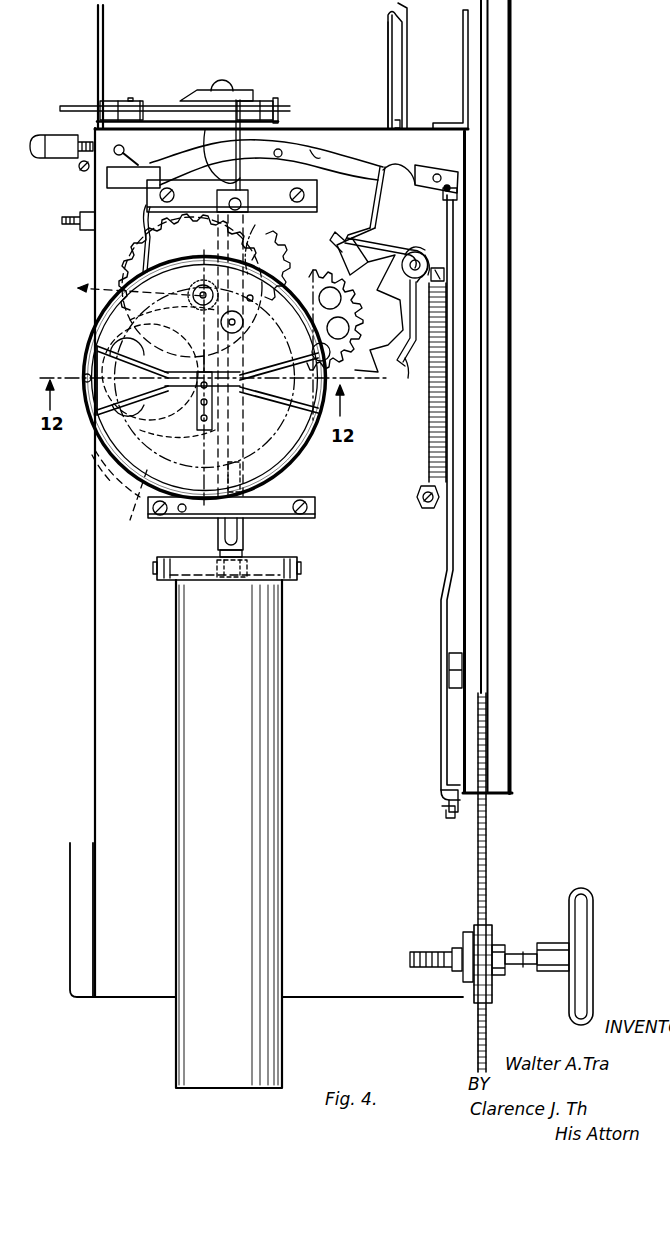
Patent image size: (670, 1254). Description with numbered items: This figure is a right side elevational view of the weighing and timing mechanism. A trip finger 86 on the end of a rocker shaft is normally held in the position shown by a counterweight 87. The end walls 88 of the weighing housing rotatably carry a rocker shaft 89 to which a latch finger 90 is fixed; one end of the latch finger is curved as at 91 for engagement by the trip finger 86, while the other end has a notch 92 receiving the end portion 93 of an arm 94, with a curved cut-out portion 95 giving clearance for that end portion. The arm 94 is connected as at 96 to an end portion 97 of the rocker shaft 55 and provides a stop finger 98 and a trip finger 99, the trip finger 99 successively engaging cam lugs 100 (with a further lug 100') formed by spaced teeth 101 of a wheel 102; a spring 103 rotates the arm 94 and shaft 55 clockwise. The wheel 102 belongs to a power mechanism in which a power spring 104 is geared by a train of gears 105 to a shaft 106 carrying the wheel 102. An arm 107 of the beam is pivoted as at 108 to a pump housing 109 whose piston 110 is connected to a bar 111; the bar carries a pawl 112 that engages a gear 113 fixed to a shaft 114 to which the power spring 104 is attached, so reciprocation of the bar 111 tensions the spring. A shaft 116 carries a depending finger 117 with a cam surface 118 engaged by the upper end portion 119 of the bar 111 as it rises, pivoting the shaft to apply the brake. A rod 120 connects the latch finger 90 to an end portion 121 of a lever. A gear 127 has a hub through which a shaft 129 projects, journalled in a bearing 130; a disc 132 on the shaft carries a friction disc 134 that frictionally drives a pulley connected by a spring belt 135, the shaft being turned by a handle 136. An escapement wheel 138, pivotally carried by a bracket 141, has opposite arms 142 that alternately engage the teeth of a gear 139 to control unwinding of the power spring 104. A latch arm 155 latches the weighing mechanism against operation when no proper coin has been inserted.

The rocker shaft 55 is at (403, 270).
The trip finger 86 is at (127, 150).
The counterweight 87 is at (45, 160).
The end walls 88 is at (352, 148).
The rocker shaft 89 is at (281, 150).
The latch finger 90 is at (320, 158).
The curved end portion 91 is at (150, 175).
The notch 92 is at (383, 167).
The end portion of arm 93 is at (378, 190).
The arm 94 is at (392, 245).
The curved cut-out portion 95 is at (405, 180).
The connection 96 is at (426, 268).
The end portion of rocker shaft 97 is at (445, 276).
The stop finger 98 is at (350, 228).
The trip finger 99 is at (403, 378).
The cam lugs 100 is at (370, 305).
The pawl arm 100' is at (480, 323).
The spaced teeth 101 is at (425, 262).
The wheel 102 is at (432, 318).
The spring 103 is at (426, 445).
The power spring 104 is at (115, 440).
The train of gears 105 is at (370, 388).
The shaft 106 is at (318, 455).
The arm 107 is at (178, 580).
The pivot connection 108 is at (155, 572).
The pump housing 109 is at (235, 750).
The piston 110 is at (250, 575).
The bar 111 is at (217, 530).
The pawl 112 is at (212, 381).
The gear 113 is at (197, 412).
The shaft 114 is at (100, 480).
The shaft 116 is at (160, 105).
The depending finger 117 is at (247, 160).
The cam surface 118 is at (205, 130).
The upper end portion of bar 119 is at (248, 192).
The rod 120 is at (452, 520).
The end portion of lever 121 is at (448, 813).
The gear 127 is at (478, 1020).
The shaft 129 is at (515, 967).
The bearing 130 is at (555, 943).
The disc 132 is at (500, 945).
The friction disc 134 is at (490, 985).
The spring belt 135 is at (488, 850).
The handle 136 is at (585, 955).
The escapement wheel 138 is at (127, 480).
The gear 139 is at (135, 258).
The bracket 141 is at (318, 500).
The arms 142 is at (97, 347).
The latch arm 155 is at (180, 100).